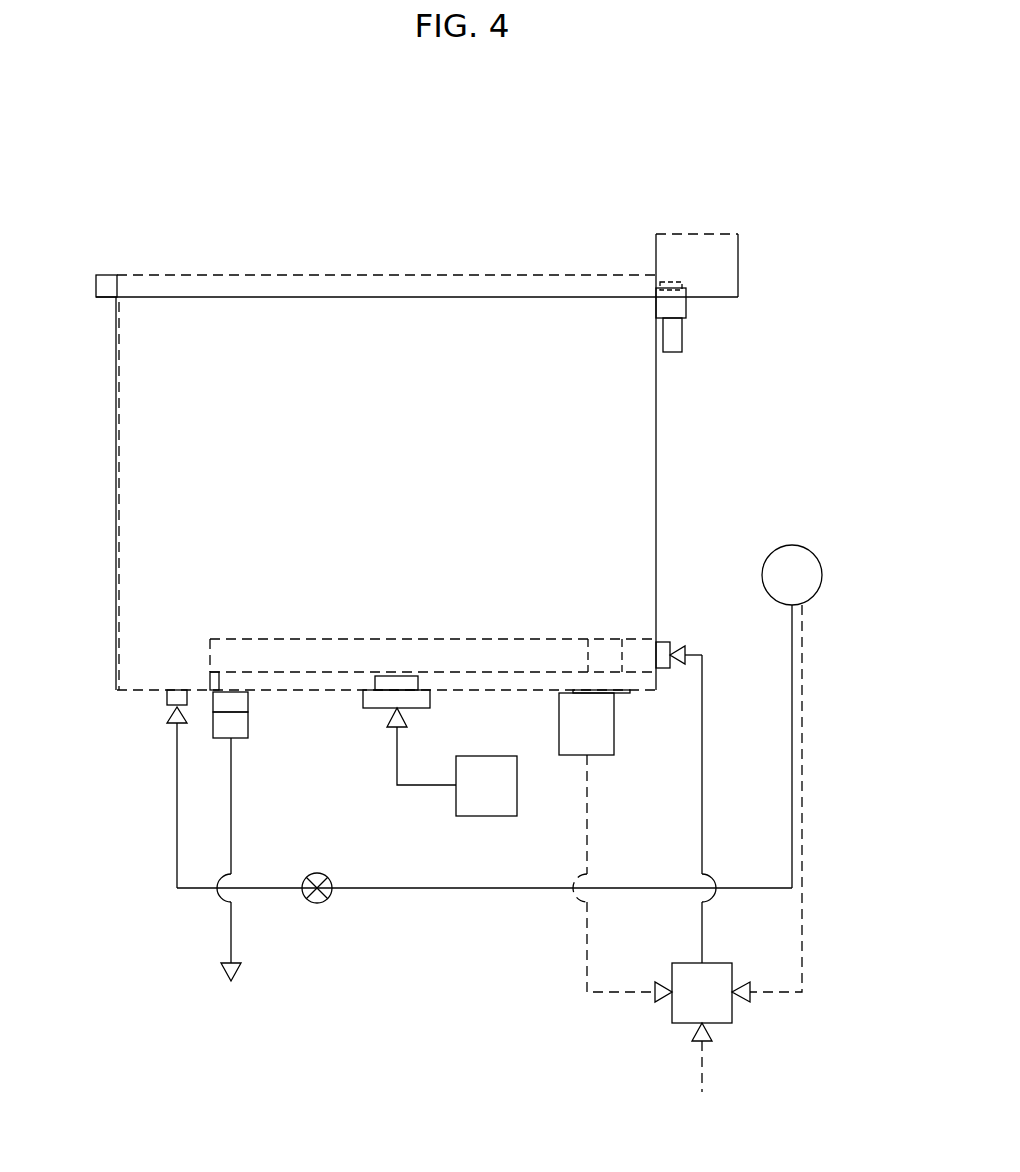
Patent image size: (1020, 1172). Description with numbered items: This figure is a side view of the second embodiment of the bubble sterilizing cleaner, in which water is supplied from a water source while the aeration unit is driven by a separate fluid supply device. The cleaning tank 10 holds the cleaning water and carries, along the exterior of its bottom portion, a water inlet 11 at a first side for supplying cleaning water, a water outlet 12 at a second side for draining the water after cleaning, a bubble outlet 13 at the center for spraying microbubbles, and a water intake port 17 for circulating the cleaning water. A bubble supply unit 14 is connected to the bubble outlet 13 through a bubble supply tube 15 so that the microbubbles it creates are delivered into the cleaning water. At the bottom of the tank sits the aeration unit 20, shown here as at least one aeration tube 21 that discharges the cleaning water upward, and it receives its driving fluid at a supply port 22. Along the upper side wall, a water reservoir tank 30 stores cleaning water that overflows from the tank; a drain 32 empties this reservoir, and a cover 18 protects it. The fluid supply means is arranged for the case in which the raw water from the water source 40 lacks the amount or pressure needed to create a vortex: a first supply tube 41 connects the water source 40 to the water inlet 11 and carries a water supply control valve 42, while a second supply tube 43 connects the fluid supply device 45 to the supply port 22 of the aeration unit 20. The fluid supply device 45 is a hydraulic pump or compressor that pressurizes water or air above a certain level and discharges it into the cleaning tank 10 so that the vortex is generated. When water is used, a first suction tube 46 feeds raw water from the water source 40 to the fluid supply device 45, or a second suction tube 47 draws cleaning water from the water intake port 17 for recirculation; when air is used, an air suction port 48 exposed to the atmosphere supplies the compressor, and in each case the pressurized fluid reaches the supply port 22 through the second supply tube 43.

The cleaning tank 10 is at (116, 425).
The water inlet 11 is at (167, 697).
The water outlet 12 is at (250, 727).
The bubble outlet 13 is at (375, 680).
The bubble supply unit 14 is at (484, 817).
The bubble supply tube 15 is at (420, 788).
The water intake port 17 is at (614, 733).
The cover 18 is at (697, 233).
The aeration unit 20 is at (548, 635).
The aeration tube 21 is at (290, 638).
The supply port 22 is at (665, 668).
The water reservoir tank 30 is at (688, 308).
The drain 32 is at (685, 342).
The water source 40 is at (818, 558).
The first supply tube 41 is at (464, 889).
The water supply control valve 42 is at (328, 898).
The second supply tube 43 is at (702, 782).
The fluid supply device 45 is at (672, 1010).
The first suction tube 46 is at (802, 918).
The second suction tube 47 is at (587, 948).
The air suction port 48 is at (702, 1065).